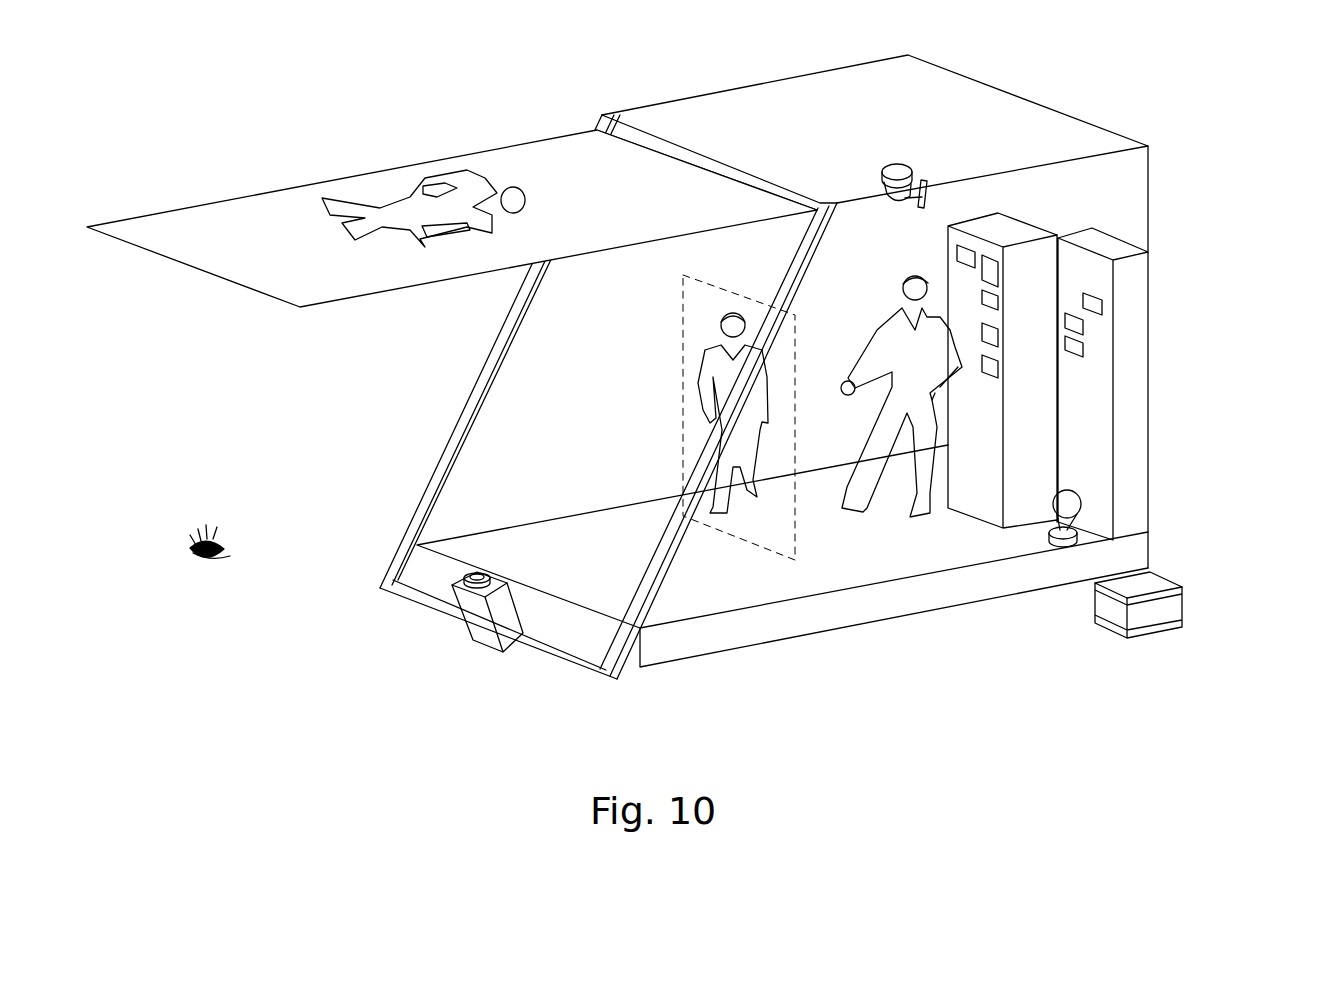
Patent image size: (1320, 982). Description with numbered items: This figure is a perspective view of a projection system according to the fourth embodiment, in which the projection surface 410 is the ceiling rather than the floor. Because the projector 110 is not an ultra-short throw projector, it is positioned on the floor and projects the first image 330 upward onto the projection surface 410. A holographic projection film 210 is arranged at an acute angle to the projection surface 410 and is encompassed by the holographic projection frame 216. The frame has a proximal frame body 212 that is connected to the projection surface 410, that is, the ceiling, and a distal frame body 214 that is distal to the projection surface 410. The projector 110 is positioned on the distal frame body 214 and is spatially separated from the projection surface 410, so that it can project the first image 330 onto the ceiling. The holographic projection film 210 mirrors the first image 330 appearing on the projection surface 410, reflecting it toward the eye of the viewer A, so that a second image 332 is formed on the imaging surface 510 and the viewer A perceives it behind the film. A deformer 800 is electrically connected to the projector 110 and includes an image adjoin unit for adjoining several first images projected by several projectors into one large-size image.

The projector 110 is at (488, 648).
The holographic projection film 210 is at (602, 387).
The proximal frame body 212 is at (667, 140).
The distal frame body 214 is at (547, 652).
The holographic projection frame 216 is at (656, 597).
The first image 330 is at (421, 176).
The second image 332 is at (767, 383).
The projection surface 410 is at (262, 192).
The imaging surface 510 is at (729, 288).
The deformer 800 is at (1183, 608).
The viewer A is at (213, 561).